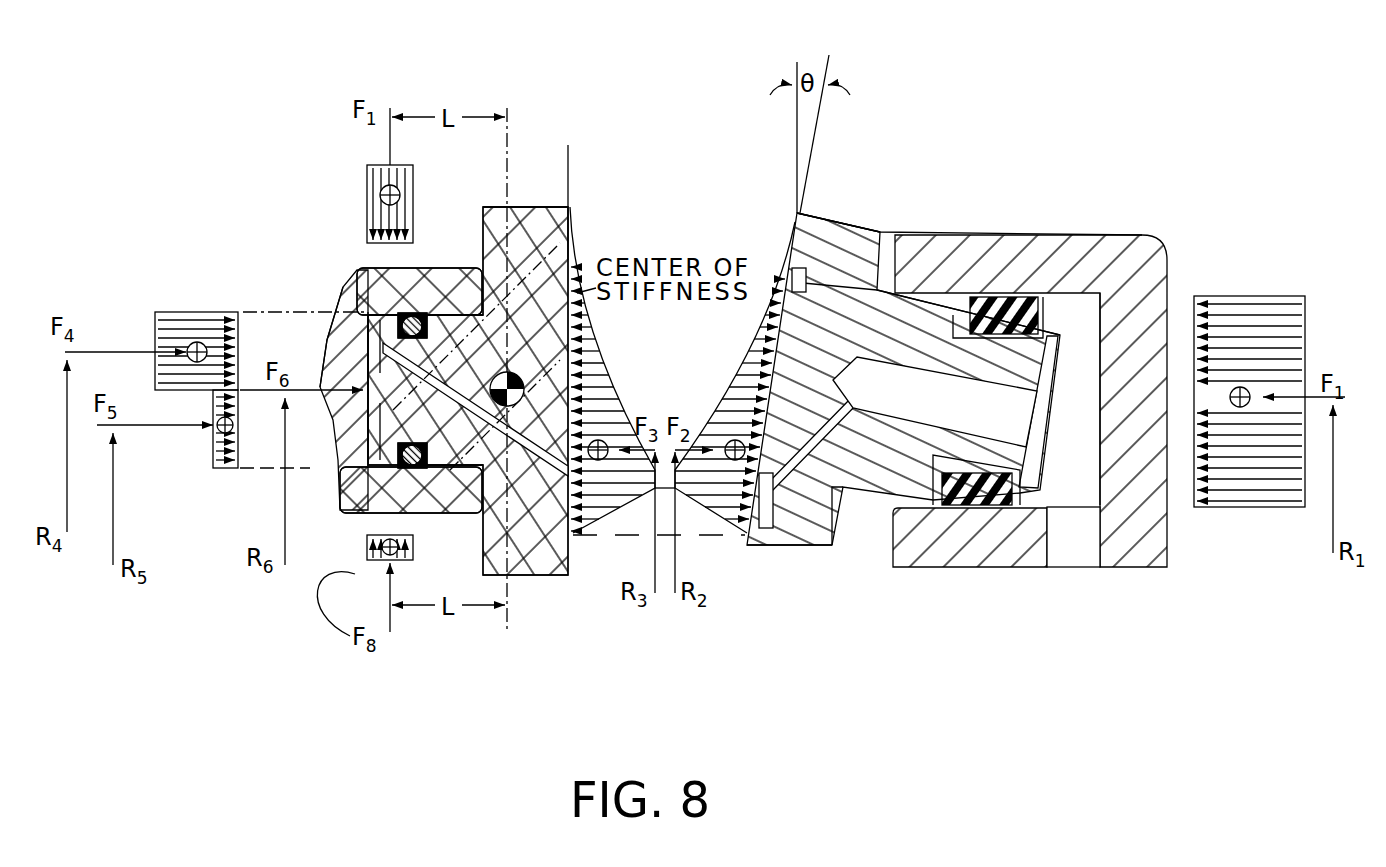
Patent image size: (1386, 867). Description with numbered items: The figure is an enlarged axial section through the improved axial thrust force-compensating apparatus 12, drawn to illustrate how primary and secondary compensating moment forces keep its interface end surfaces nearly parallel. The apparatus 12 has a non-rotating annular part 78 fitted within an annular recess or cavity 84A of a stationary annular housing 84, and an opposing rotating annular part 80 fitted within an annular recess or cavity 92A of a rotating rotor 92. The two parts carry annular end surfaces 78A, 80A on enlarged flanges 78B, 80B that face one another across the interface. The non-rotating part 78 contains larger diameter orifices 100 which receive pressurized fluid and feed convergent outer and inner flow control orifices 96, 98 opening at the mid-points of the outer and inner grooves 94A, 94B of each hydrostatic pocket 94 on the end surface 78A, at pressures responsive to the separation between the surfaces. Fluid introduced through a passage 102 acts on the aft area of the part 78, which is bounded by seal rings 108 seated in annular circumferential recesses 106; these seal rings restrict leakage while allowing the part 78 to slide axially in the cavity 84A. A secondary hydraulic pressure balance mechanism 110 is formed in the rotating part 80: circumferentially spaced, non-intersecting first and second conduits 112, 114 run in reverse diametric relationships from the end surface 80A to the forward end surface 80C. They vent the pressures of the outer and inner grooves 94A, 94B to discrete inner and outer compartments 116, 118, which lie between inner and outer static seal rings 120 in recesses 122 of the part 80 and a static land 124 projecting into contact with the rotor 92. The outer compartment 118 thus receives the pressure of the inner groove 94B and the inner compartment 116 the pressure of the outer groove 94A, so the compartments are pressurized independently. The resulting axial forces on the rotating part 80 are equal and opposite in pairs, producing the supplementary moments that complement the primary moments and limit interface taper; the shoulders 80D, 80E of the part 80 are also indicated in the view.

The axial thrust force-compensating apparatus 12 is at (993, 85).
The non-rotating annular part 78 is at (879, 226).
The annular end surface of the non-rotating part 78A is at (796, 224).
The enlarged flange of the non-rotating part 78B is at (820, 548).
The rotating annular part 80 is at (532, 580).
The annular end surface of the rotating part 80A is at (571, 210).
The enlarged flange of the rotating part 80B is at (553, 210).
The forward end surface of the rotating part 80C is at (378, 520).
The hub upper shoulder 80D is at (416, 312).
The hub lower shoulder 80E is at (483, 470).
The stationary annular housing 84 is at (1083, 235).
The annular recess or cavity of the housing 84A is at (1112, 303).
The rotating rotor 92 is at (352, 300).
The annular recess or cavity of the rotor 92A is at (345, 333).
The hydrostatic pocket 94 is at (790, 520).
The outer groove 94A is at (806, 272).
The inner groove 94B is at (762, 528).
The outer flow control orifice 96 is at (830, 297).
The inner flow control orifice 98 is at (836, 500).
The larger diameter orifice 100 is at (935, 402).
The passage 102 is at (1075, 543).
The annular circumferential recess 106 is at (965, 308).
The seal ring 108 is at (1010, 305).
The secondary hydraulic pressure balance mechanism 110 is at (282, 270).
The first conduit 112 is at (580, 238).
The second conduit 114 is at (573, 536).
The inner compartment 116 is at (341, 492).
The outer compartment 118 is at (352, 278).
The static seal ring 120 is at (405, 313).
The annular circumferential recess of the rotating part 122 is at (404, 312).
The static land 124 is at (336, 450).